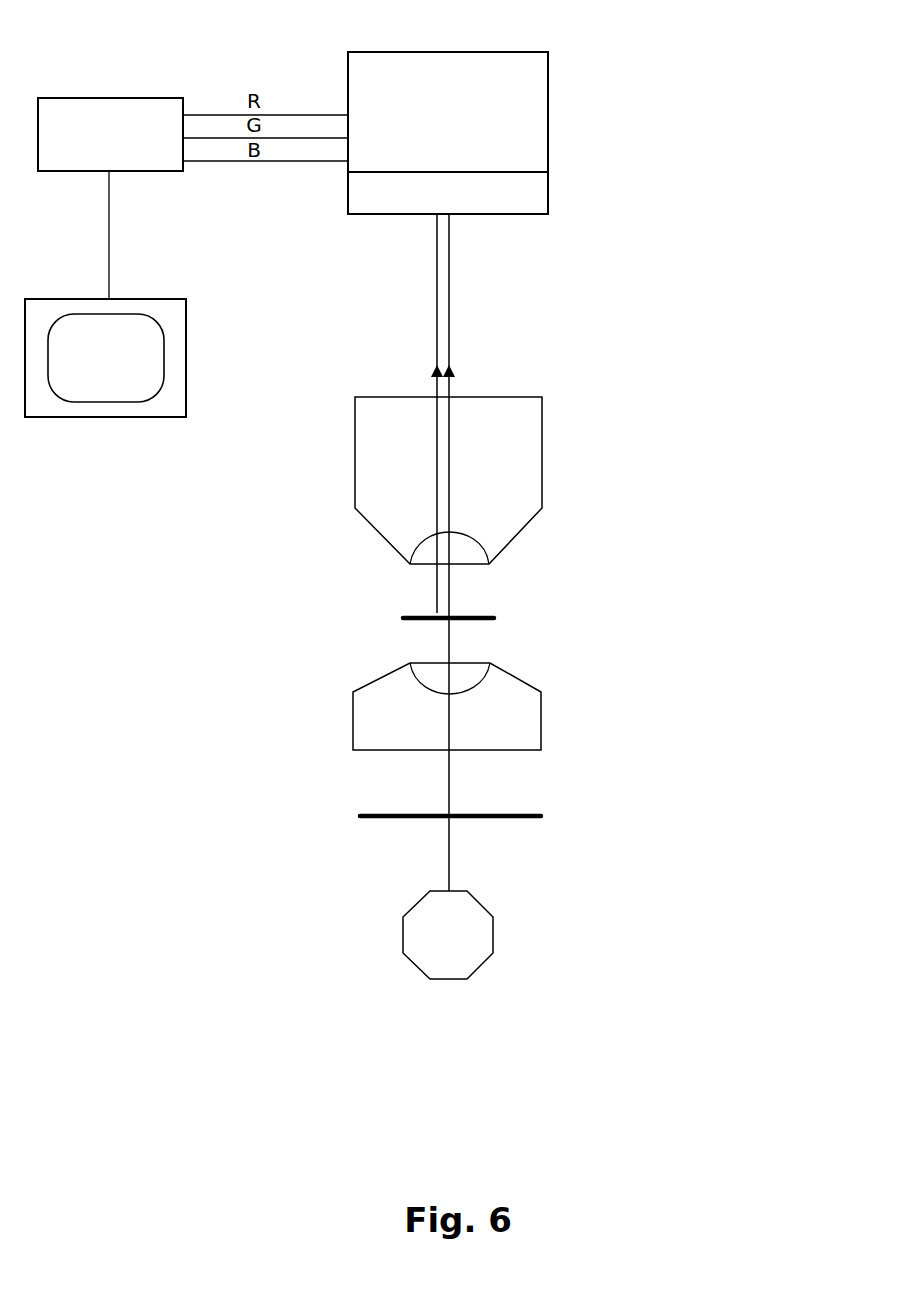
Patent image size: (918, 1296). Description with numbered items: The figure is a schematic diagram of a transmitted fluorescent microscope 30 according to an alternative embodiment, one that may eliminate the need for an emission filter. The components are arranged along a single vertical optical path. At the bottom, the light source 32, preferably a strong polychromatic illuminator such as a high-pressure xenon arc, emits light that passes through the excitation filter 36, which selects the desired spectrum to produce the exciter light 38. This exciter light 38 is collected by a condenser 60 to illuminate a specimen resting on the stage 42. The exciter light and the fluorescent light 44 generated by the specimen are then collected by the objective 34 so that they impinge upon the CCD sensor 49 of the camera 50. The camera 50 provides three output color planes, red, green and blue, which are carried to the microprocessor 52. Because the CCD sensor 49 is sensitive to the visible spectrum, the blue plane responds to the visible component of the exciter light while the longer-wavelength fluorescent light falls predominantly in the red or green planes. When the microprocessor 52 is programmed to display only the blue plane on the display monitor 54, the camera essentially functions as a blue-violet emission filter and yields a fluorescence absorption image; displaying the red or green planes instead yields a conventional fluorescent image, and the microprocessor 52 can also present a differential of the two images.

The microscope 30 is at (739, 45).
The light source 32 is at (483, 907).
The objective 34 is at (542, 463).
The excitation filter 36 is at (540, 814).
The exciter light 38 is at (450, 258).
The stage 42 is at (487, 613).
The fluorescent light 44 is at (437, 309).
The CCD sensor 49 is at (548, 193).
The camera 50 is at (548, 97).
The microprocessor 52 is at (115, 97).
The display monitor 54 is at (137, 299).
The condenser 60 is at (541, 716).